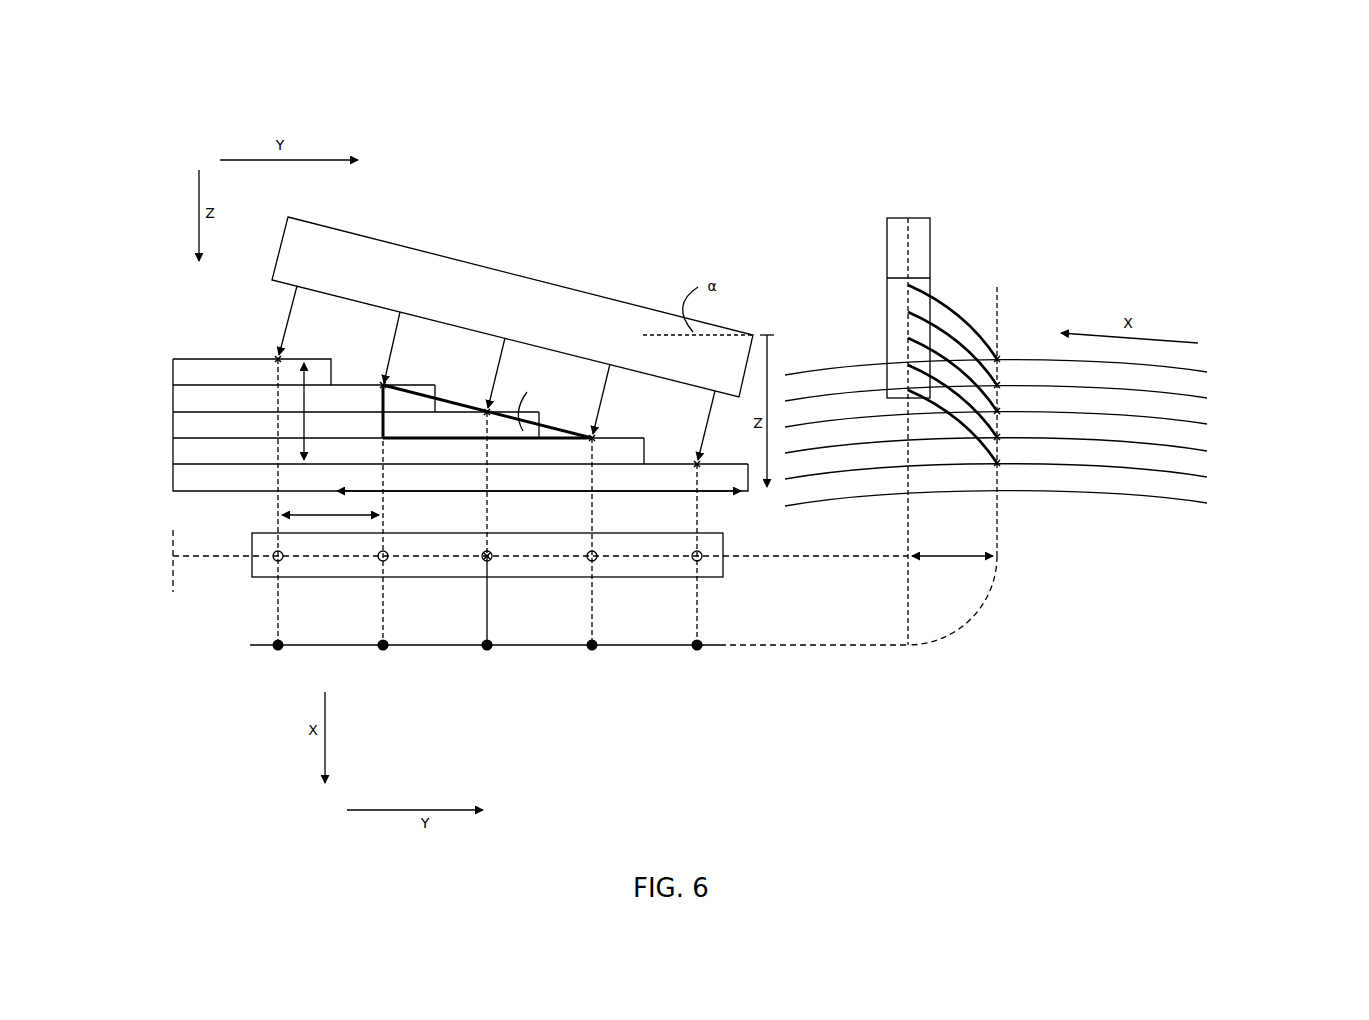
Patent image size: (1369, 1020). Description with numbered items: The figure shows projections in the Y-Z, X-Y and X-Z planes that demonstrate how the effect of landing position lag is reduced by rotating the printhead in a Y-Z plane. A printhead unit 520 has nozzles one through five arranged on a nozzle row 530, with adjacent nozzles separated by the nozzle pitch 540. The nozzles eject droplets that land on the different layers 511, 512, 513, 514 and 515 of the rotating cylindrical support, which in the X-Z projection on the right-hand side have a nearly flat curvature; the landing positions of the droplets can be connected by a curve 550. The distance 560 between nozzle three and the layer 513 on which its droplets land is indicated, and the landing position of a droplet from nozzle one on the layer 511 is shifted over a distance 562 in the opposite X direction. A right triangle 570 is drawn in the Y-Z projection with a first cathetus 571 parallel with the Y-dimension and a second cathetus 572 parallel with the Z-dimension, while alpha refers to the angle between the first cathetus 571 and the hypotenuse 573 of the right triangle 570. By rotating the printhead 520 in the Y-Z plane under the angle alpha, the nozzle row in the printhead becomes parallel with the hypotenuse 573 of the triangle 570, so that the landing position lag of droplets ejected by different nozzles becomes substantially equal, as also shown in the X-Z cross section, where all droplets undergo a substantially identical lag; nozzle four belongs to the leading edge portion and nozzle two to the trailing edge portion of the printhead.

The layer 511 is at (200, 372).
The layer 512 is at (200, 396).
The layer 513 is at (200, 418).
The layer 514 is at (200, 452).
The layer 515 is at (200, 483).
The printhead unit 520 is at (590, 307).
The nozzle row 530 is at (243, 557).
The nozzle pitch 540 is at (330, 507).
The curve 550 is at (550, 647).
The distance between nozzle and layer 560 is at (520, 247).
The landing position shift 562 is at (277, 563).
The right triangle 570 is at (452, 422).
The first cathetus 571 is at (440, 440).
The second cathetus 572 is at (380, 421).
The hypotenuse 573 is at (413, 393).